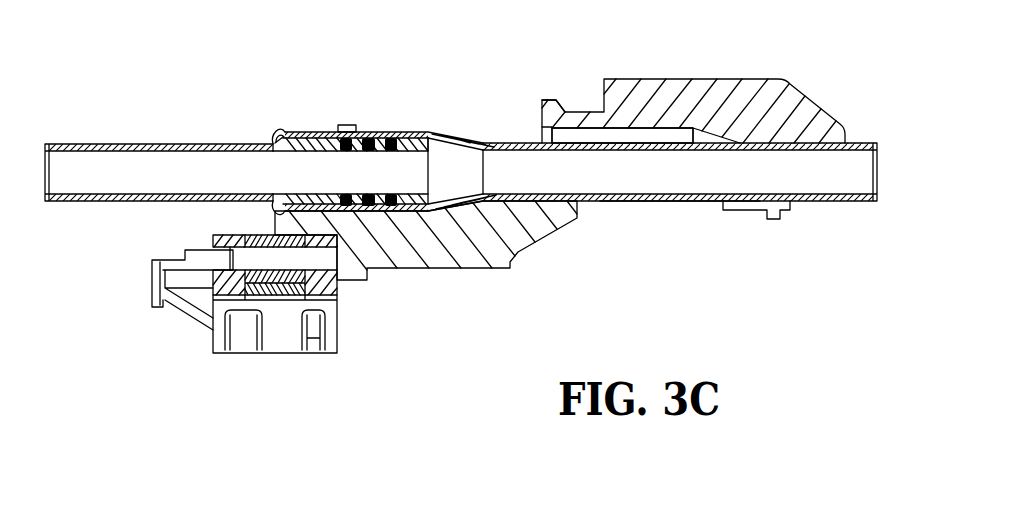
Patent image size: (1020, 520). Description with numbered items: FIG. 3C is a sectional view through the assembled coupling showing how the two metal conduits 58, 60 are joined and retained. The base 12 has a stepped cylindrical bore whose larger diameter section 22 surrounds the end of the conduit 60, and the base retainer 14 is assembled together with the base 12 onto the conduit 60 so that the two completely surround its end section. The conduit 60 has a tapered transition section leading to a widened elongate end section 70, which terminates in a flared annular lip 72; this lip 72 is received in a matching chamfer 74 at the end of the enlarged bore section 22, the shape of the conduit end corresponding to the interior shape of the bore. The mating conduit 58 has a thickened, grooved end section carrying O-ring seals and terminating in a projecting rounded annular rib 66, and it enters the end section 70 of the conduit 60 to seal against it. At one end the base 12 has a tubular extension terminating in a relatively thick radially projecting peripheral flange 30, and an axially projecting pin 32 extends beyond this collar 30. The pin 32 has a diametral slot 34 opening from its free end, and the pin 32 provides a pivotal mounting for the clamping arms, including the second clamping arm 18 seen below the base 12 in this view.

The base 12 is at (502, 267).
The base retainer 14 is at (770, 79).
The second clamping arm 18 is at (210, 338).
The larger diameter section 22 is at (648, 135).
The peripheral flange 30 is at (550, 103).
The axially projecting pin 32 is at (312, 258).
The diametral slot 34 is at (193, 250).
The conduit 58 is at (112, 144).
The conduit 60 is at (673, 203).
The rounded annular rib 66 is at (272, 140).
The widened elongate end section 70 is at (307, 132).
The flared annular lip 72 is at (280, 127).
The chamfer 74 is at (543, 135).